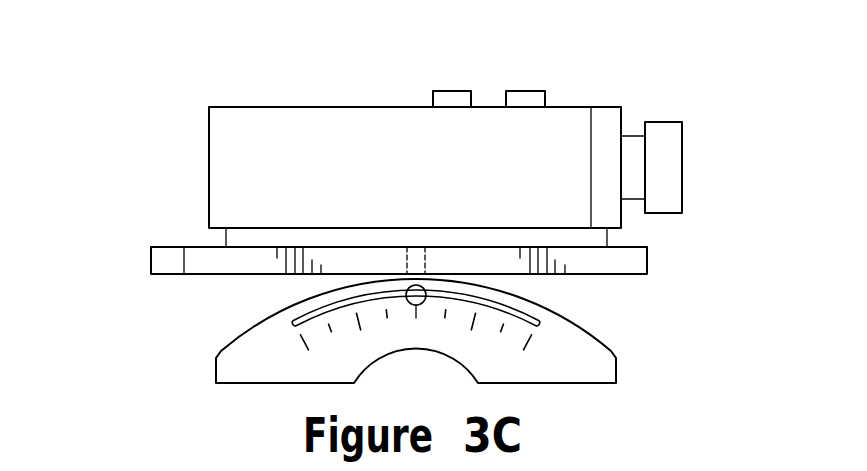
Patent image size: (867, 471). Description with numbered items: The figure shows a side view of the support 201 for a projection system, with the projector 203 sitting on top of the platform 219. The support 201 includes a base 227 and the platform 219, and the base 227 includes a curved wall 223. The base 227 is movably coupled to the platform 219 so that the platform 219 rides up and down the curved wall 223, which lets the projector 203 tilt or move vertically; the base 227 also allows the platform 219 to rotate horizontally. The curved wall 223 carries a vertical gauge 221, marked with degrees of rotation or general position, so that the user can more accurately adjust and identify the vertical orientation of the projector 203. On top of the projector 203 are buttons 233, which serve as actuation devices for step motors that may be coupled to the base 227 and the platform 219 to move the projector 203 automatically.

The support 201 is at (705, 276).
The projector 203 is at (343, 107).
The buttons 233 is at (520, 91).
The platform 219 is at (151, 262).
The vertical gauge 221 is at (530, 342).
The curved wall 223 is at (595, 333).
The base 227 is at (216, 373).